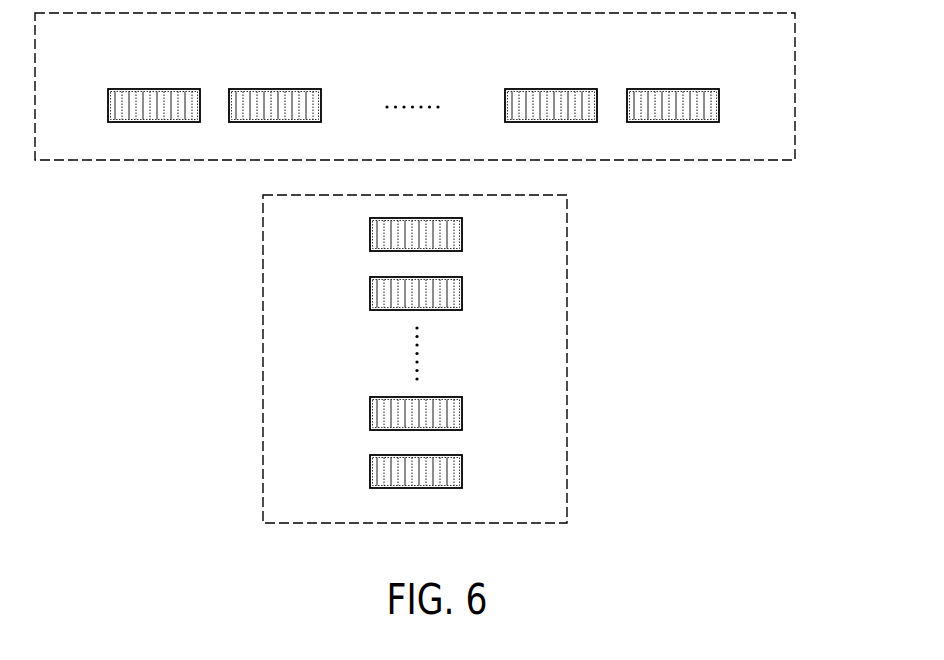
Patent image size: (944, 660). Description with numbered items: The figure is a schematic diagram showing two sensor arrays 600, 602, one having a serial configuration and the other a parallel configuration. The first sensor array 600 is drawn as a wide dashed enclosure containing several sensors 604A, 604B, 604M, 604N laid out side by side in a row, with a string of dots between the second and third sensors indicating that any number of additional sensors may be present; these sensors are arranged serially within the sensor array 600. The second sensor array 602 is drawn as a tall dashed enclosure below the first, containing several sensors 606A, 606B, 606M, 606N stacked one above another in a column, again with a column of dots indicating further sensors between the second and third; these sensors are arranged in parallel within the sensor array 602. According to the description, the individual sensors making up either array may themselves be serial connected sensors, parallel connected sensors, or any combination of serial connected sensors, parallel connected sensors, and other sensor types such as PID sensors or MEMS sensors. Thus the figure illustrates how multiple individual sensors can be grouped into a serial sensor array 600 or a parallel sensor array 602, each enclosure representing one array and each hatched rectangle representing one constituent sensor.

The sensor array 600 is at (797, 111).
The sensor array 602 is at (570, 363).
The sensor 604A is at (152, 89).
The sensor 604B is at (272, 89).
The sensor 604M is at (549, 89).
The sensor 604N is at (671, 89).
The sensor 606A is at (463, 235).
The sensor 606B is at (463, 293).
The sensor 606M is at (463, 413).
The sensor 606N is at (463, 471).